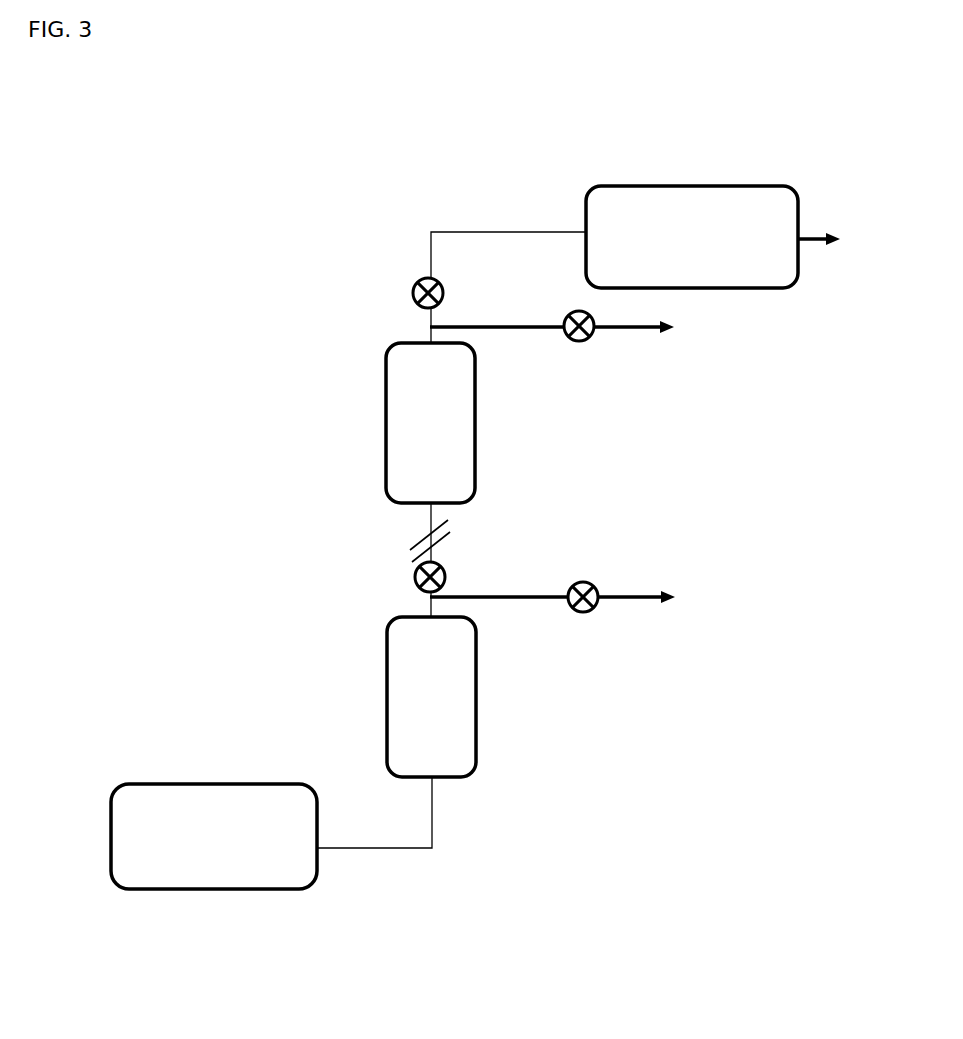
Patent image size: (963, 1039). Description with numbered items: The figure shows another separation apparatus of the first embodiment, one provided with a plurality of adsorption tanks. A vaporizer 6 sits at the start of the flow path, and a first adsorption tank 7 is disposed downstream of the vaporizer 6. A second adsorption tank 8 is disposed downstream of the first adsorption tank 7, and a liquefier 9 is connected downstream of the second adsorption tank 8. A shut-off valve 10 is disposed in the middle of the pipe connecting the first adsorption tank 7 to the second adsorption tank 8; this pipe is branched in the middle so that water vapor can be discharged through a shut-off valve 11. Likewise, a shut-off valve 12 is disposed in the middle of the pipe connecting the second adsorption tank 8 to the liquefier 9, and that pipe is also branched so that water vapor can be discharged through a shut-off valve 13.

The vaporizer 6 is at (317, 868).
The first adsorption tank 7 is at (476, 732).
The second adsorption tank 8 is at (475, 442).
The liquefier 9 is at (798, 278).
The shut-off valve 10 is at (446, 571).
The shut-off valve 11 is at (596, 609).
The shut-off valve 12 is at (444, 288).
The shut-off valve 13 is at (592, 338).